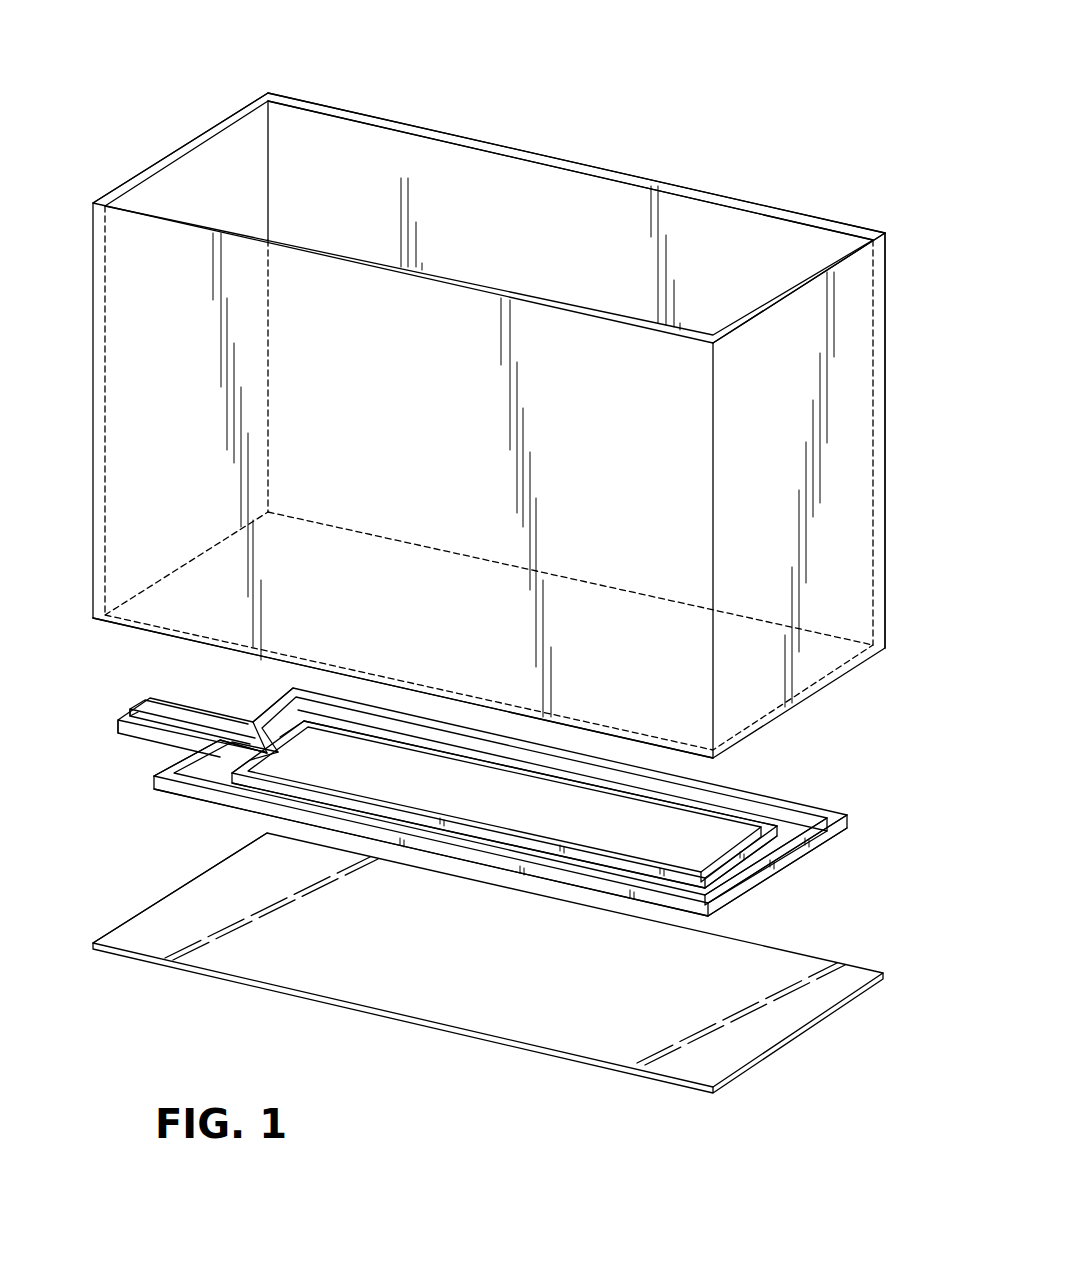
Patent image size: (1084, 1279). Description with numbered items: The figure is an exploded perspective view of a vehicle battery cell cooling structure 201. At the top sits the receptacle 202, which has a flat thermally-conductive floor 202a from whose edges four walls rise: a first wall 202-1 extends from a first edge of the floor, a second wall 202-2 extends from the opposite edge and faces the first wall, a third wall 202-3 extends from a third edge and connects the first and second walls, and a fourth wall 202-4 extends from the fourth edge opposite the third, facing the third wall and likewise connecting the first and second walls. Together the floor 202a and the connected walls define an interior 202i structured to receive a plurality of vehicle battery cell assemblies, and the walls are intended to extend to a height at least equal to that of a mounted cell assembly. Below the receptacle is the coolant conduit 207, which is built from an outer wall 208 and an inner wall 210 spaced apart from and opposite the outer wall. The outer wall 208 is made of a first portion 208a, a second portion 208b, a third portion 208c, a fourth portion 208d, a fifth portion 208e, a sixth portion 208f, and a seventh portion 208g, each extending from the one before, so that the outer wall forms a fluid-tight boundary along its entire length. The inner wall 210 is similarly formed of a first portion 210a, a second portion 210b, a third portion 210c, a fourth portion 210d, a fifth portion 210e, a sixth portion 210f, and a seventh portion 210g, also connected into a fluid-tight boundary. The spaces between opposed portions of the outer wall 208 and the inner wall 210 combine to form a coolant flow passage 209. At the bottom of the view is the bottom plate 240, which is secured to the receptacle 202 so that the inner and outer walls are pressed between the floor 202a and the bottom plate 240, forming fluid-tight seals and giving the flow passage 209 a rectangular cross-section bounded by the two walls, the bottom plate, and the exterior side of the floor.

The vehicle battery cell cooling structure 201 is at (596, 100).
The receptacle 202 is at (124, 178).
The first wall 202-1 is at (232, 178).
The second wall 202-2 is at (852, 452).
The third wall 202-3 is at (307, 634).
The fourth wall 202-4 is at (727, 235).
The floor 202a is at (805, 665).
The interior 202i is at (446, 192).
The coolant conduit 207 is at (233, 833).
The outer wall 208 is at (500, 722).
The first portion 208a is at (150, 700).
The second portion 208b is at (273, 702).
The third portion 208c is at (797, 832).
The fourth portion 208d is at (787, 866).
The fifth portion 208e is at (430, 845).
The sixth portion 208f is at (195, 760).
The seventh portion 208g is at (118, 726).
The coolant flow passage 209 is at (788, 820).
The inner wall 210 is at (595, 790).
The first portion 210a is at (140, 705).
The second portion 210b is at (278, 727).
The third portion 210c is at (376, 740).
The fourth portion 210d is at (720, 868).
The fifth portion 210e is at (486, 836).
The sixth portion 210f is at (215, 760).
The seventh portion 210g is at (120, 713).
The bottom plate 240 is at (757, 1034).